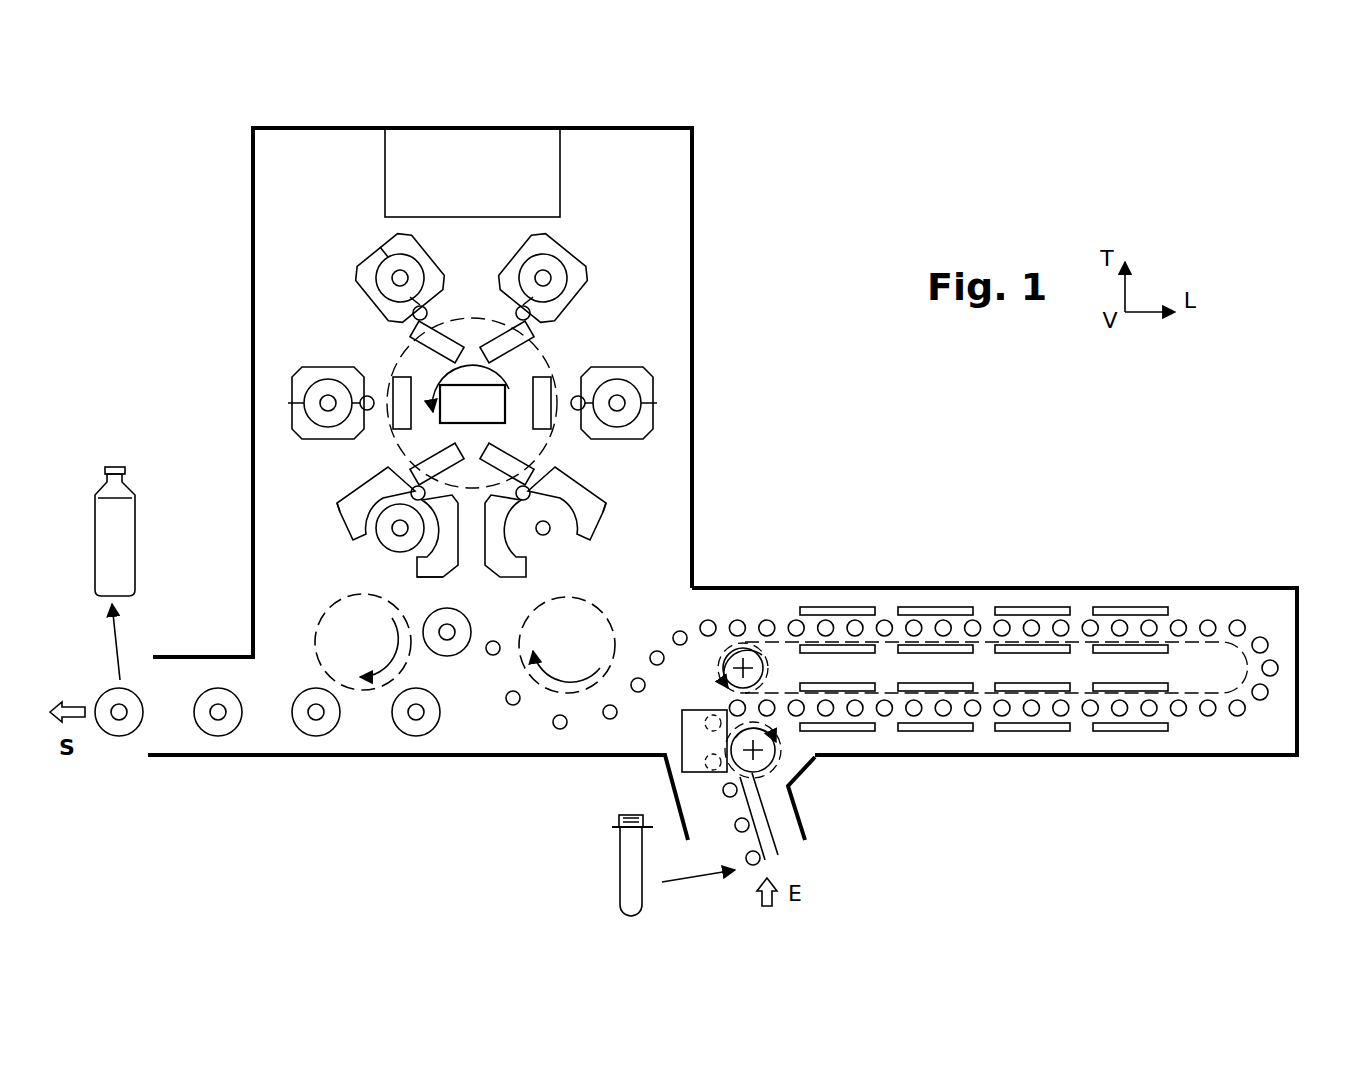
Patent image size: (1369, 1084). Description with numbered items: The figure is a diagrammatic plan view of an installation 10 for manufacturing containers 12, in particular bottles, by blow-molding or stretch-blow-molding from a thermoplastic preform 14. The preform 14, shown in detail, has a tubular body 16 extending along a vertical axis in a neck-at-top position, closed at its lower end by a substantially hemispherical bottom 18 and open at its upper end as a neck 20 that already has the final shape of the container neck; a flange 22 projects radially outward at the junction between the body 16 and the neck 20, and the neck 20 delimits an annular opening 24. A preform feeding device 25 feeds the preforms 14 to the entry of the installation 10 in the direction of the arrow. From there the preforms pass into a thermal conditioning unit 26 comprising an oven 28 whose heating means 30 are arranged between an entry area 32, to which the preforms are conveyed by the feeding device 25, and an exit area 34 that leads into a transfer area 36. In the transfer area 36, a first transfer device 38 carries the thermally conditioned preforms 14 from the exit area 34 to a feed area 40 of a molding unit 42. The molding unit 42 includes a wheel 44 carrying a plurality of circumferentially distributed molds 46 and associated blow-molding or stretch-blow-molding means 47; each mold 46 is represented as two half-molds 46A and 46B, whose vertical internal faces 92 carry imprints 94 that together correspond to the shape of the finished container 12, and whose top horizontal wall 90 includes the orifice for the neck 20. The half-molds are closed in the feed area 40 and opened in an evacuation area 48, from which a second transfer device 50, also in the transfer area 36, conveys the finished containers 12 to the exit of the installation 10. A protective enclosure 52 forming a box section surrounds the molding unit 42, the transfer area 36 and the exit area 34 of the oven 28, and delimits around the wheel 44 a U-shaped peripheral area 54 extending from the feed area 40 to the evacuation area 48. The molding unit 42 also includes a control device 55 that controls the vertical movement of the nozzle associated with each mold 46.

The installation 10 is at (830, 244).
The container 12 is at (115, 555).
The preform 14 is at (680, 630).
The body 16 is at (636, 860).
The bottom 18 is at (630, 905).
The neck 20 is at (628, 815).
The flange 22 is at (645, 827).
The annular opening 24 is at (620, 812).
The preform feeding device 25 is at (806, 856).
The thermal conditioning unit 26 is at (1197, 597).
The oven 28 is at (1300, 650).
The heating means 30 is at (1103, 610).
The entry area 32 is at (800, 746).
The exit area 34 is at (772, 610).
The transfer area 36 is at (465, 712).
The first transfer device 38 is at (540, 690).
The feed area 40 is at (610, 545).
The molding unit 42 is at (453, 180).
The wheel 44 is at (516, 381).
The mold 46 is at (580, 272).
The half-mold 46A is at (490, 570).
The half-mold 46B is at (605, 495).
The blow-molding or stretch-blow-molding means 47 is at (540, 470).
The evacuation area 48 is at (354, 552).
The second transfer device 50 is at (352, 658).
The protective enclosure 52 is at (248, 207).
The U-shaped peripheral area 54 is at (572, 203).
The control device 55 is at (472, 404).
The top horizontal wall 90 is at (545, 535).
The vertical internal face 92 is at (400, 565).
The imprint 94 is at (376, 505).